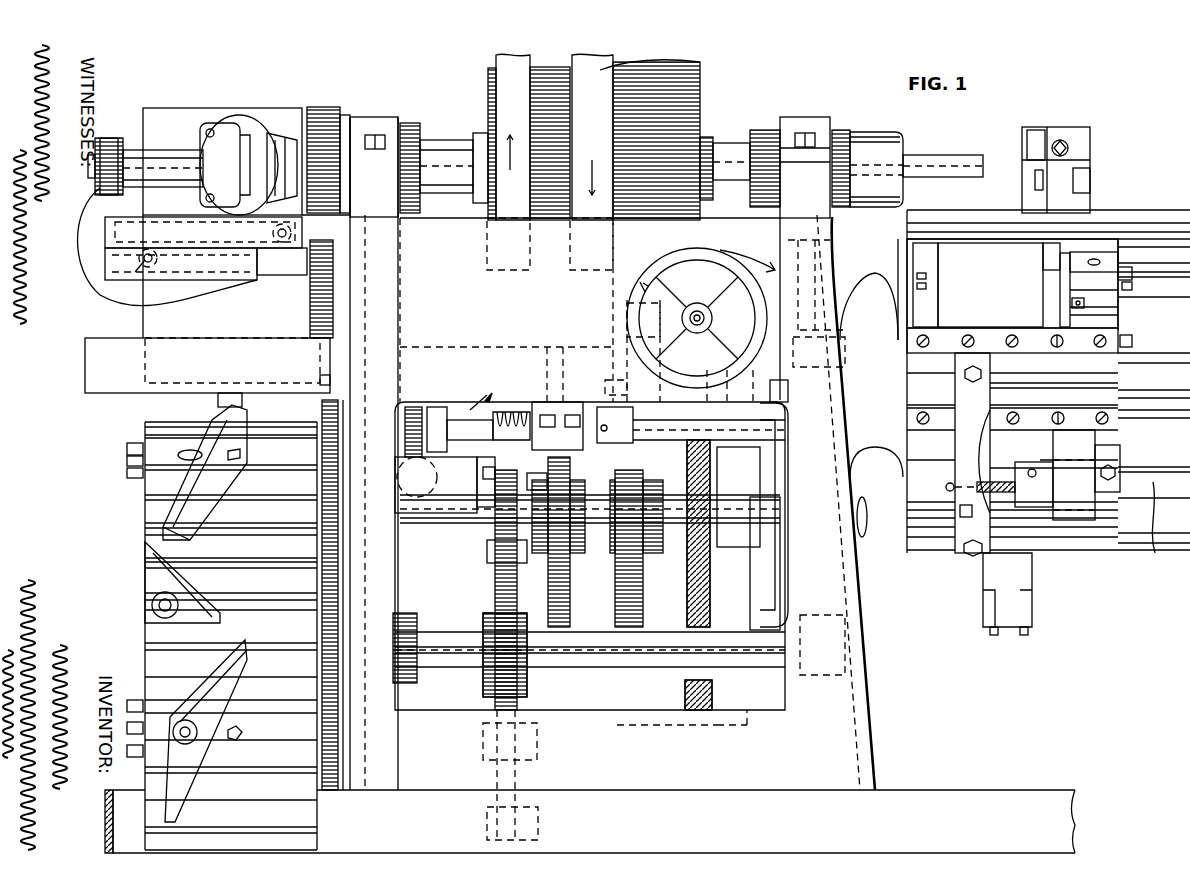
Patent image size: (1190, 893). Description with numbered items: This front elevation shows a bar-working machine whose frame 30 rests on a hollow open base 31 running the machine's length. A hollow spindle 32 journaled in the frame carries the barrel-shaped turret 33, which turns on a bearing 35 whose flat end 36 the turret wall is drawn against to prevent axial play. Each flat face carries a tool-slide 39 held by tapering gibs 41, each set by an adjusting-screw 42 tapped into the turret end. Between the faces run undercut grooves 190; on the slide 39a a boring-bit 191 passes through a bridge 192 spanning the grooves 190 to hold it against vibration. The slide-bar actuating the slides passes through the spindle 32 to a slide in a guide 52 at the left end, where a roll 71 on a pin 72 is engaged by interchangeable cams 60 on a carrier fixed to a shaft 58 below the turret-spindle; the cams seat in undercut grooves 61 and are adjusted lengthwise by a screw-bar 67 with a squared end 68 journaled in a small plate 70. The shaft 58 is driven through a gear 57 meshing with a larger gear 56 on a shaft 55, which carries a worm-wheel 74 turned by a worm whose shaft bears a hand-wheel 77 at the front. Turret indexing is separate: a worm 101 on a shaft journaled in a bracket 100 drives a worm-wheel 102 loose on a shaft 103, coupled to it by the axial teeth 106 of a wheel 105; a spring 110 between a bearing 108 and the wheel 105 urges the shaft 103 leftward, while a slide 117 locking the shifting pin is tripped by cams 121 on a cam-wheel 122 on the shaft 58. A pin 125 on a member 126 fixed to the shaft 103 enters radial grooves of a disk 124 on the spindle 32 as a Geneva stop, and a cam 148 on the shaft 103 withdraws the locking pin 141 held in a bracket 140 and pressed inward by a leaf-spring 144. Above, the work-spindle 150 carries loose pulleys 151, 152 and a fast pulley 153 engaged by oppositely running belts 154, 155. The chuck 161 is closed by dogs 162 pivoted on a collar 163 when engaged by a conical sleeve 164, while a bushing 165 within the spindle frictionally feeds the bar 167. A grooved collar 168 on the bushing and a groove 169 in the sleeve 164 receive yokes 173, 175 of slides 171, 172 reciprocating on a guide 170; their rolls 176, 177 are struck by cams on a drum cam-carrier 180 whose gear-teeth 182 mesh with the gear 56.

The frame 30 is at (815, 738).
The hollow open base 31 is at (942, 790).
The hollow spindle 32 is at (468, 335).
The barrel-shaped turret 33 is at (908, 268).
The bearing 35 is at (870, 440).
The flat end of bearing 36 is at (965, 462).
The tool-slide 39 is at (1135, 210).
The tool-slide 39a is at (1165, 533).
The tapering gib 41 is at (1132, 278).
The adjusting-screw 42 is at (1128, 304).
The guide 52 is at (117, 385).
The shaft 55 is at (597, 525).
The larger gear 56 is at (322, 410).
The gear 57 is at (340, 727).
The shaft 58 is at (450, 630).
The cam 60 is at (180, 483).
The groove 61 is at (150, 527).
The threaded screw 67 is at (127, 472).
The squared end of screw-bar 68 is at (127, 460).
The small plate 70 is at (138, 443).
The roll 71 is at (231, 623).
The pin 72 is at (218, 410).
The worm-wheel 74 is at (688, 595).
The hand-wheel 77 is at (688, 262).
The bracket 100 is at (433, 513).
The worm 101 is at (490, 485).
The worm-wheel 102 is at (418, 405).
The shaft 103 is at (590, 407).
The wheel 105 is at (492, 381).
The axially-extending teeth 106 is at (452, 412).
The bearing 108 is at (566, 442).
The spring 110 is at (520, 410).
The slide 117 is at (535, 471).
The cam 121 is at (490, 495).
The cam-wheel 122 is at (515, 590).
The disk 124 is at (648, 543).
The pin 125 is at (612, 345).
The rotating member 126 is at (612, 484).
The bracket 140 is at (786, 482).
The locking pin 141 is at (790, 500).
The leaf-spring 144 is at (760, 545).
The cam 148 is at (788, 386).
The spindle 150 is at (440, 146).
The loose pulley 151 is at (550, 143).
The loose pulley 152 is at (681, 141).
The fast pulley 153 is at (619, 137).
The belt 154 is at (705, 63).
The belt 155 is at (500, 88).
The chuck 161 is at (866, 130).
The dog 162 is at (262, 125).
The collar 163 is at (232, 125).
The conical sleeve 164 is at (288, 137).
The bushing 165 is at (162, 150).
The bar 167 is at (92, 150).
The grooved collar 168 is at (108, 138).
The groove 169 is at (330, 108).
The guide 170 is at (296, 262).
The slide 171 is at (105, 240).
The slide 172 is at (135, 272).
The yoke 173 is at (374, 167).
The yoke 175 is at (105, 270).
The roll 176 is at (262, 278).
The roll 177 is at (105, 303).
The cam-carrier 180 is at (200, 112).
The gear-teeth 182 is at (352, 118).
The groove 190 is at (1032, 353).
The boring-bit 191 is at (1007, 493).
The bridge 192 is at (960, 482).